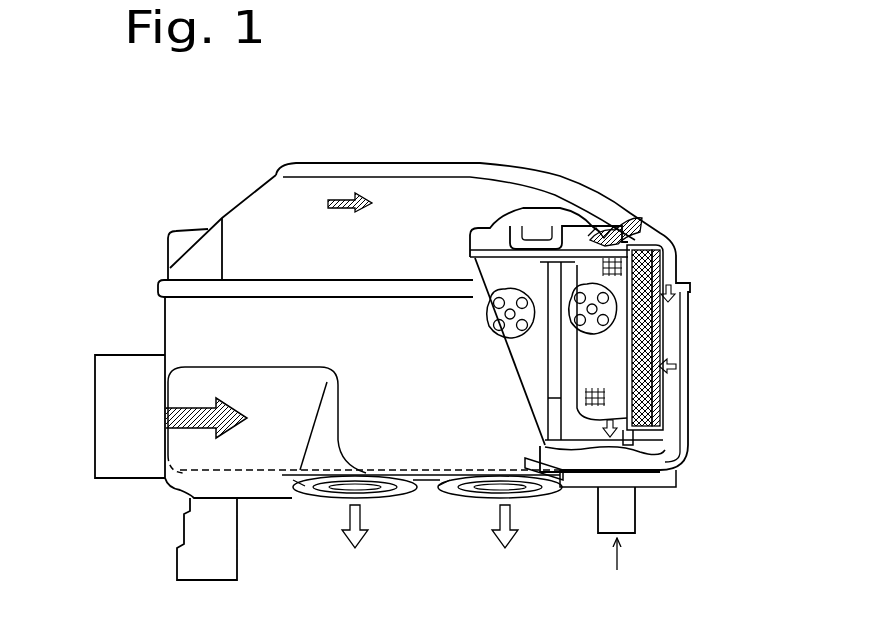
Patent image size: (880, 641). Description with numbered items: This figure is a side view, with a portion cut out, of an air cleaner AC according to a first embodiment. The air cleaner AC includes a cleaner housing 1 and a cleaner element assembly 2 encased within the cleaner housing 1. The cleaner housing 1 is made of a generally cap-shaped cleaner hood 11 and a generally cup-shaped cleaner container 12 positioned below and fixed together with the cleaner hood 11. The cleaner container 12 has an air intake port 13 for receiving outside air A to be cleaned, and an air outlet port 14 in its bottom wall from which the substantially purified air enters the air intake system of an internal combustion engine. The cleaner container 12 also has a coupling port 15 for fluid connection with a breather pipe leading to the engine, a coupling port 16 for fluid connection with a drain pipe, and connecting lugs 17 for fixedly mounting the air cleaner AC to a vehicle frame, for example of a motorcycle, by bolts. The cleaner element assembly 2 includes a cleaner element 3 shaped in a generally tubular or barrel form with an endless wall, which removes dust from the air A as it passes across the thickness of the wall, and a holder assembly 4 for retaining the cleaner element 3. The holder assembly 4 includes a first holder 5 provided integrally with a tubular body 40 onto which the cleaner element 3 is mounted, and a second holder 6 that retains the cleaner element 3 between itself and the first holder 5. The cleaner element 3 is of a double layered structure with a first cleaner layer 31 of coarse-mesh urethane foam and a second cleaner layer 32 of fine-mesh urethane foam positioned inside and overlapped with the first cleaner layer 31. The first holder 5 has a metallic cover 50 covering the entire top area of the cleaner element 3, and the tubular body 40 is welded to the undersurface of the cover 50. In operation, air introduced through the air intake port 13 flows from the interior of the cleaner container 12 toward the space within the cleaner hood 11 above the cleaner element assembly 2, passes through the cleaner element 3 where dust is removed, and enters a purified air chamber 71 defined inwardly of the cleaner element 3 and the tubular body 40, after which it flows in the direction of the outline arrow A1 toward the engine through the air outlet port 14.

The cleaner housing 1 is at (441, 157).
The cleaner element assembly 2 is at (637, 214).
The cleaner element 3 is at (752, 268).
The holder assembly 4 is at (540, 398).
The first holder 5 is at (488, 248).
The second holder 6 is at (665, 441).
The cleaner hood 11 is at (560, 184).
The cleaner container 12 is at (690, 397).
The air intake port 13 is at (105, 415).
The air outlet port 14 is at (485, 497).
The coupling port 15 is at (607, 533).
The coupling port 16 is at (232, 560).
The connecting lugs 17 is at (655, 484).
The first cleaner layer 31 is at (658, 312).
The second cleaner layer 32 is at (660, 337).
The tubular body 40 is at (632, 352).
The cover 50 is at (599, 218).
The purified air chamber 71 is at (543, 377).
The air A is at (345, 200).
The air cleaner AC is at (248, 190).
The outline arrow A1 is at (512, 522).